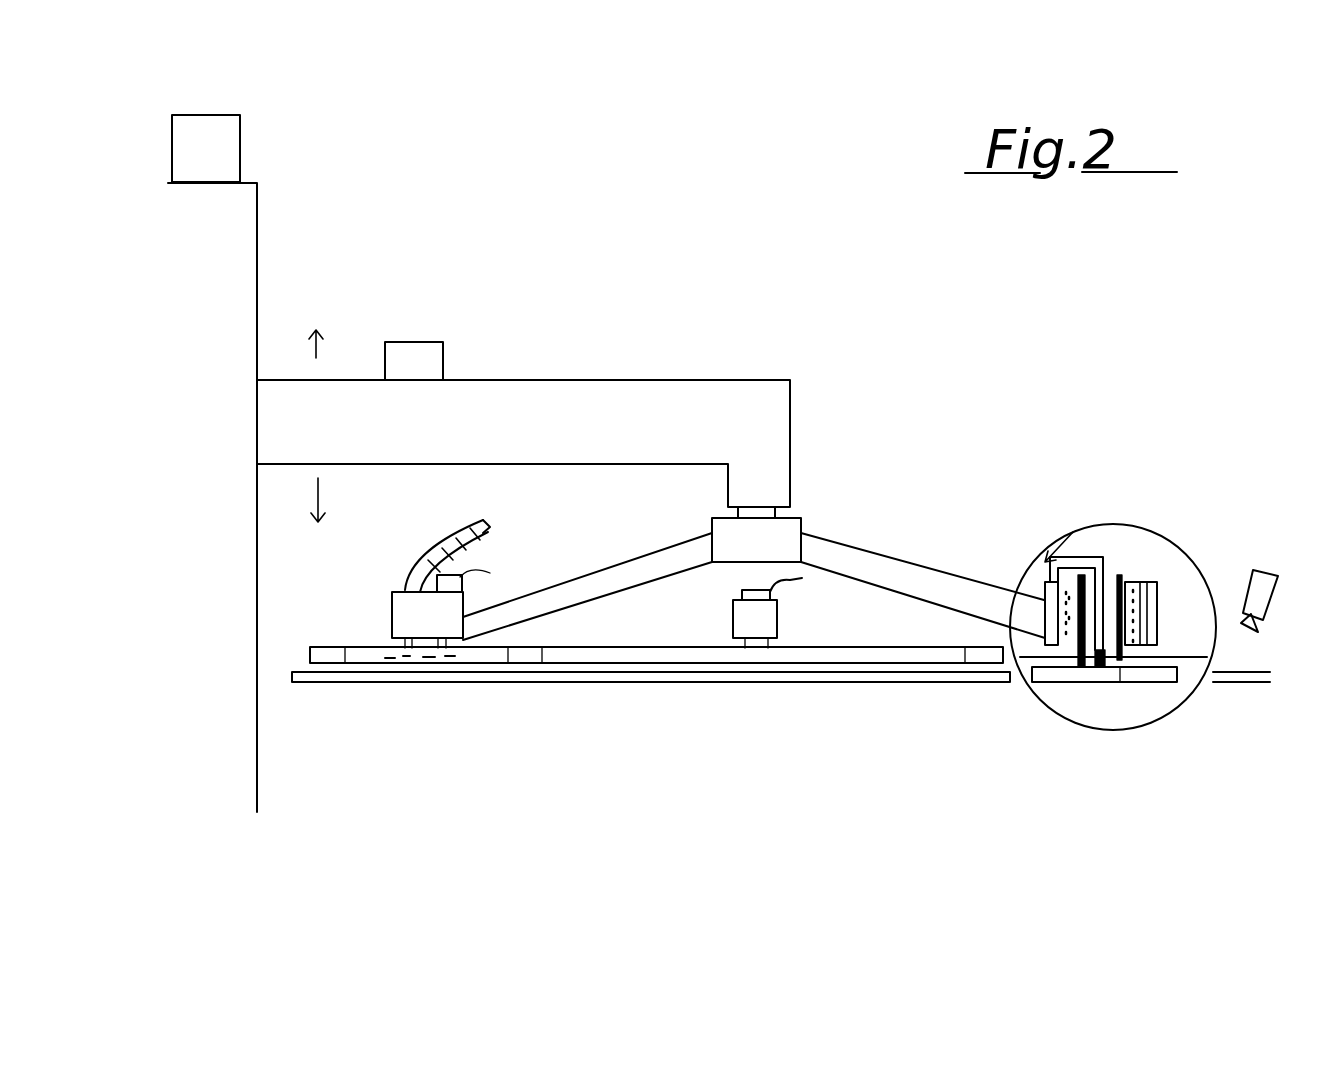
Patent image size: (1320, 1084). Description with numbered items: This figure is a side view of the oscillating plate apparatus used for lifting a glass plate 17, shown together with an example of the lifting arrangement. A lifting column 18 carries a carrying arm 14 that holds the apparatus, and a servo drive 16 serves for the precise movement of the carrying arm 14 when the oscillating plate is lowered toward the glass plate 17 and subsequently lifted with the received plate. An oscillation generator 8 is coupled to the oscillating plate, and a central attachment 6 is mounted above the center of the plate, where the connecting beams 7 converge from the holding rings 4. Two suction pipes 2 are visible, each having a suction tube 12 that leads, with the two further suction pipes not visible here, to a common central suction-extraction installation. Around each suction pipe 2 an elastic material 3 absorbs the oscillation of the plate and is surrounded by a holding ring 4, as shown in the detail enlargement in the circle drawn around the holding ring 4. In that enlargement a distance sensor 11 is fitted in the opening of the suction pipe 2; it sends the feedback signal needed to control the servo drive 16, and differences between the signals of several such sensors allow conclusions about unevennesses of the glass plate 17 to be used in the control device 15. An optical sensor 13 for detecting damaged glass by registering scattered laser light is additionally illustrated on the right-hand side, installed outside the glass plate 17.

The suction pipe 2 is at (1075, 650).
The elastic material 3 is at (1132, 582).
The holding ring 4 is at (1158, 583).
The central attachment 6 is at (767, 512).
The connecting beam 7 is at (857, 550).
The oscillation generator 8 is at (753, 622).
The distance sensor 11 is at (1110, 657).
The suction tube 12 is at (483, 523).
The optical sensor 13 is at (1263, 570).
The carrying arm 14 is at (623, 408).
The control device 15 is at (435, 350).
The servo drive 16 is at (240, 160).
The glass plate 17 is at (518, 677).
The lifting column 18 is at (257, 752).